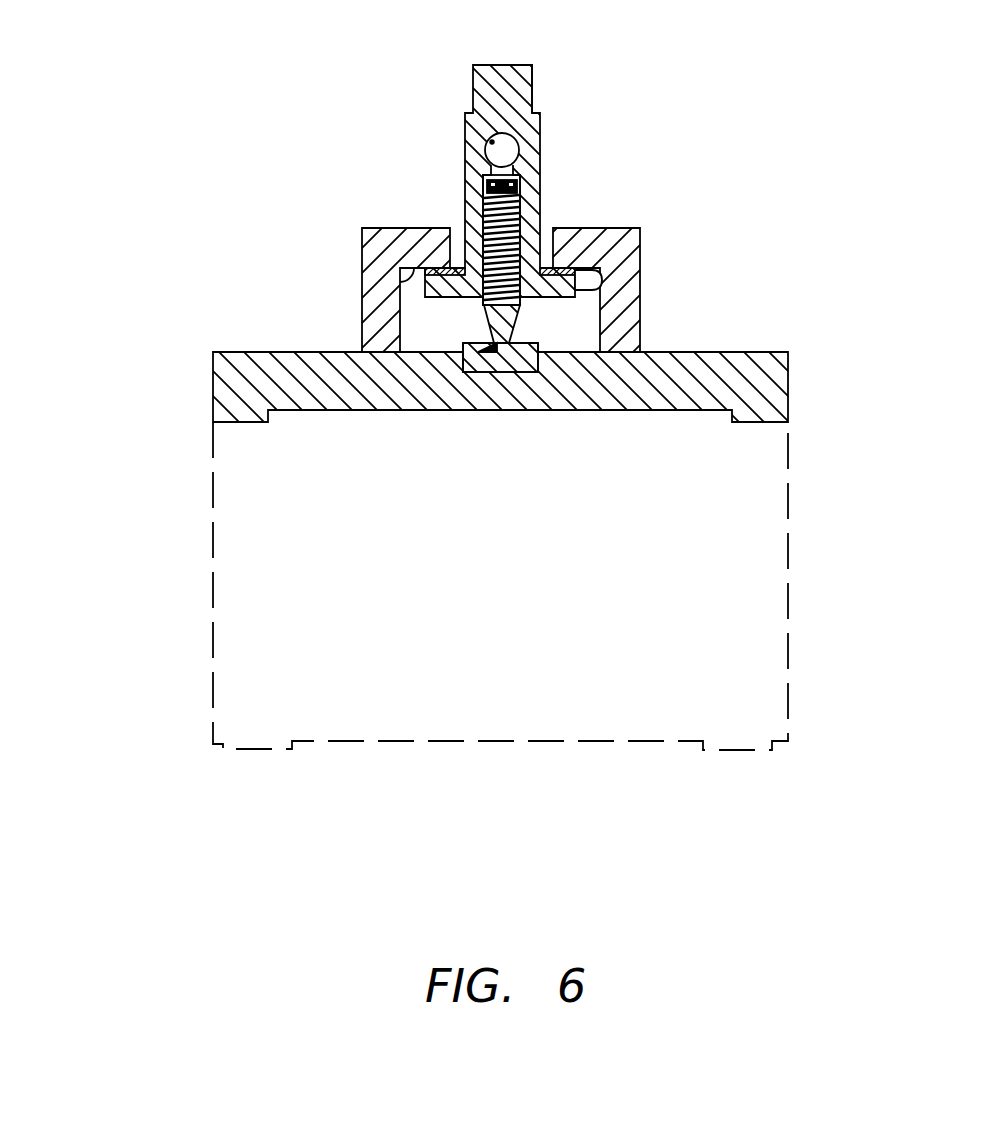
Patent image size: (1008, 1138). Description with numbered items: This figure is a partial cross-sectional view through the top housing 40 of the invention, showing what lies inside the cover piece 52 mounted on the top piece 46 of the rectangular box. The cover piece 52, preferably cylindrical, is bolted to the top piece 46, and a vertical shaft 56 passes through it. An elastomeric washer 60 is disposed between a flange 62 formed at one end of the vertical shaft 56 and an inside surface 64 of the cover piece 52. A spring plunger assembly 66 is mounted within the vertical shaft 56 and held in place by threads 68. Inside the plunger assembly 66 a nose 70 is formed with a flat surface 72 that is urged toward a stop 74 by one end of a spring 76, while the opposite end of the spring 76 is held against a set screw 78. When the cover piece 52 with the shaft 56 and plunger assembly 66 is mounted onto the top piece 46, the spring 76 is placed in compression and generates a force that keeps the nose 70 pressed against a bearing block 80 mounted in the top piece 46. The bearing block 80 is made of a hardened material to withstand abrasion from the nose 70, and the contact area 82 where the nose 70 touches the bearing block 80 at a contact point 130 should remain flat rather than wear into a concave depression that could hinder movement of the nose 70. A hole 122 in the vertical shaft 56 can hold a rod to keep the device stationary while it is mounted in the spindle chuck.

The top housing 40 is at (137, 352).
The top piece 46 is at (765, 388).
The cover piece 52 is at (643, 240).
The vertical shaft 56 is at (531, 88).
The elastomeric washer 60 is at (603, 280).
The flange 62 is at (576, 292).
The inside surface 64 is at (398, 283).
The spring plunger assembly 66 is at (495, 196).
The threads 68 is at (537, 193).
The nose 70 is at (522, 337).
The flat surface 72 is at (487, 332).
The stop 74 is at (490, 340).
The spring 76 is at (522, 213).
The set screw 78 is at (540, 157).
The bearing block 80 is at (500, 343).
The contact area 82 is at (498, 345).
The hole 122 is at (492, 142).
The contact point 130 is at (500, 343).